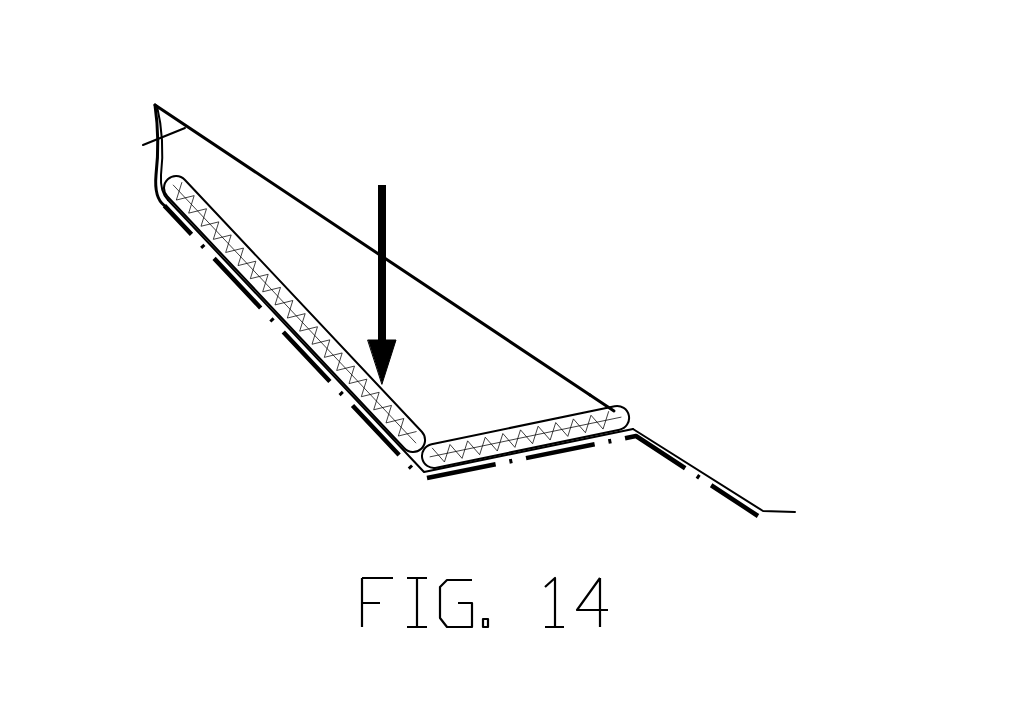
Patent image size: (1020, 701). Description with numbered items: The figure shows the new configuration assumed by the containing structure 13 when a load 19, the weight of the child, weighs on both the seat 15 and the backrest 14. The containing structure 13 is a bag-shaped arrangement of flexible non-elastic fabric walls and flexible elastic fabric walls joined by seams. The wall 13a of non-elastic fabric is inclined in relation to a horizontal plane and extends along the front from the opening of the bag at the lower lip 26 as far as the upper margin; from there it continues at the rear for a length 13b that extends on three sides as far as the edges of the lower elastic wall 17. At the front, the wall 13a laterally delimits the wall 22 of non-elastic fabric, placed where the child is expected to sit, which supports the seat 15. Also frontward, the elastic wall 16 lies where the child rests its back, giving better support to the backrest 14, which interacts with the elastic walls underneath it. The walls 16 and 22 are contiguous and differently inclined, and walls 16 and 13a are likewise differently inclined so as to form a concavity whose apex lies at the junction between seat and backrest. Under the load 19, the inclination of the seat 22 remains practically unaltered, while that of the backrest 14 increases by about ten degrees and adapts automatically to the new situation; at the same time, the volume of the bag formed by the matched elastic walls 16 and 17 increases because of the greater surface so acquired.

The containing structure 13 is at (490, 277).
The wall of non-elastic fabric 13a is at (292, 195).
The rear length of wall 13b is at (153, 130).
The backrest 14 is at (295, 320).
The seat 15 is at (528, 442).
The elastic wall 16 is at (240, 283).
The lower elastic wall 17 is at (307, 337).
The load 19 is at (386, 261).
The wall of non-elastic fabric 22 is at (623, 412).
The lower lip 26 is at (792, 513).